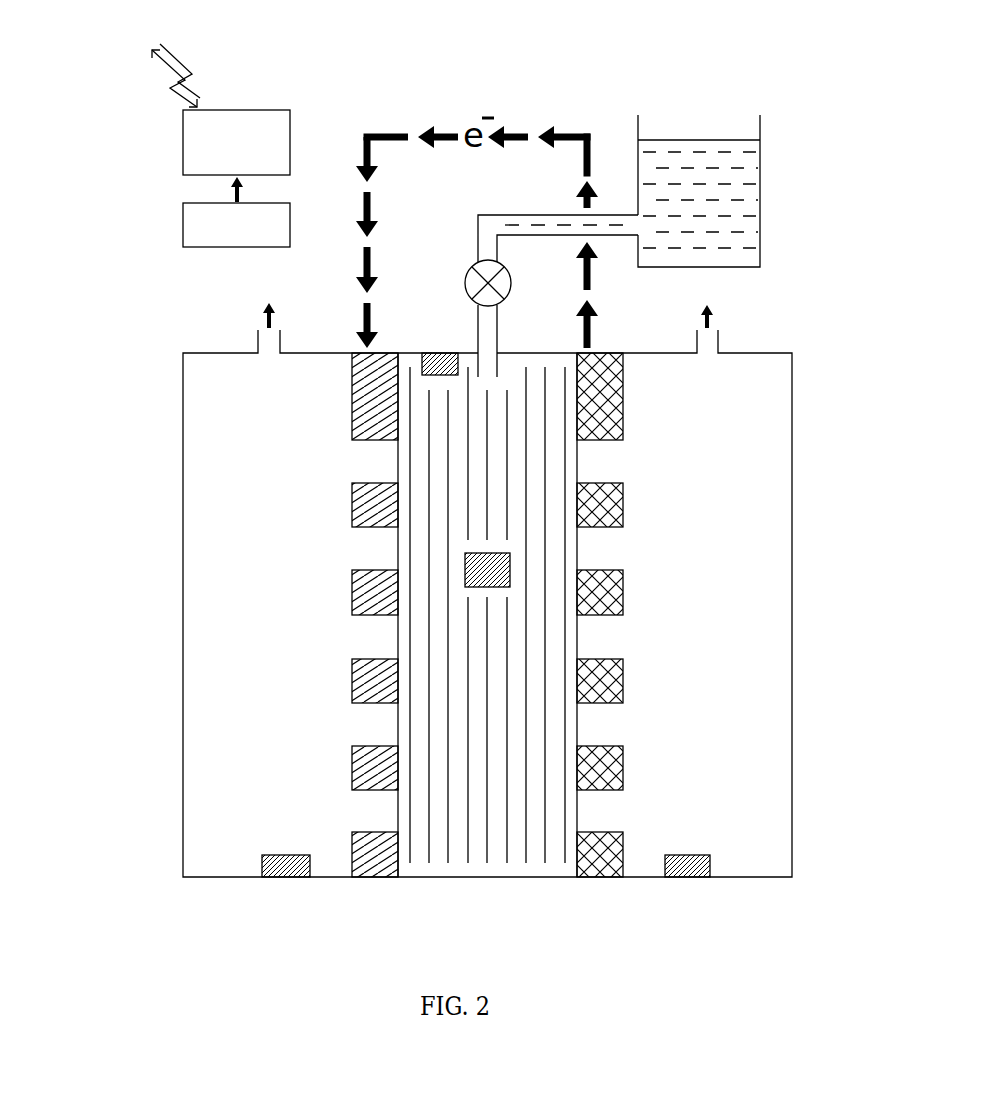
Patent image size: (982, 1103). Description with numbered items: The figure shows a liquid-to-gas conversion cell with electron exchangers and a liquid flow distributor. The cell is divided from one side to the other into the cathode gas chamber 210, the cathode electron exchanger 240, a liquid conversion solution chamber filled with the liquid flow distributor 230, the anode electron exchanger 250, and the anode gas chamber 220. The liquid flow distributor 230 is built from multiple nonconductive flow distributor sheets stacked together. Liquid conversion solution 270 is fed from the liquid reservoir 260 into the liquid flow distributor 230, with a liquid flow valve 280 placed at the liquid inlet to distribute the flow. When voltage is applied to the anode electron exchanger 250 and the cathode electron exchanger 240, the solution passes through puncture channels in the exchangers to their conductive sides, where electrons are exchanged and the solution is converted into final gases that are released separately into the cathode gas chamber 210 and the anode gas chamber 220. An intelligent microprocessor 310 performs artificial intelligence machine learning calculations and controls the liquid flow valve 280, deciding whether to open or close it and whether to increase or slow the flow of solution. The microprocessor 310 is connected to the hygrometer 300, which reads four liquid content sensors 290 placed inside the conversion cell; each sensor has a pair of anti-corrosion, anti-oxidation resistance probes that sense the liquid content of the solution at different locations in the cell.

The cathode gas chamber 210 is at (235, 438).
The anode gas chamber 220 is at (742, 440).
The liquid flow distributor 230 is at (505, 828).
The cathode electron exchanger 240 is at (352, 430).
The anode electron exchanger 250 is at (623, 420).
The liquid reservoir 260 is at (760, 162).
The liquid conversion solution 270 is at (712, 215).
The liquid flow valve 280 is at (462, 265).
The liquid content sensors 290 is at (432, 352).
The hygrometer 300 is at (183, 226).
The intelligent microprocessor (MCU) 310 is at (183, 157).